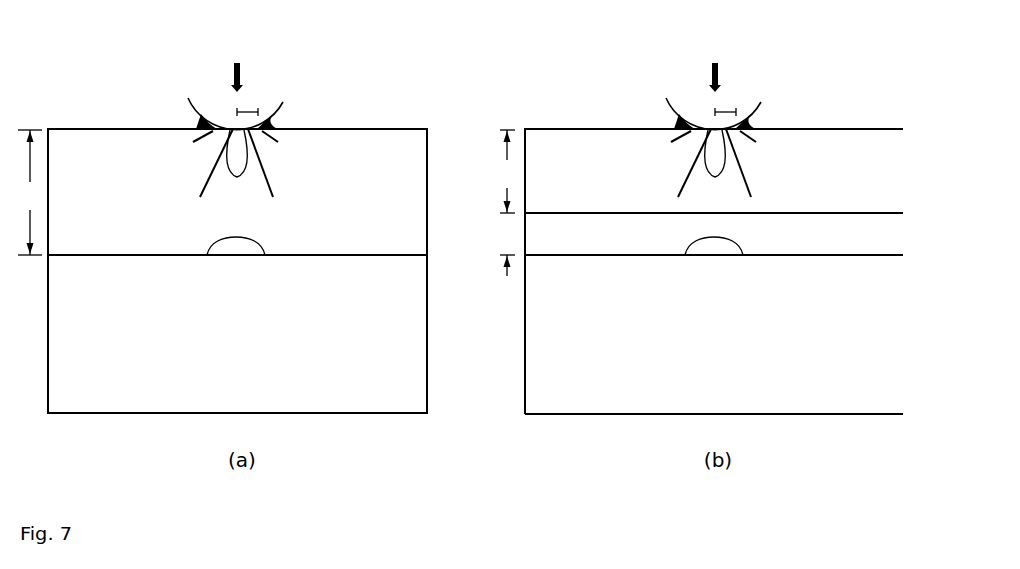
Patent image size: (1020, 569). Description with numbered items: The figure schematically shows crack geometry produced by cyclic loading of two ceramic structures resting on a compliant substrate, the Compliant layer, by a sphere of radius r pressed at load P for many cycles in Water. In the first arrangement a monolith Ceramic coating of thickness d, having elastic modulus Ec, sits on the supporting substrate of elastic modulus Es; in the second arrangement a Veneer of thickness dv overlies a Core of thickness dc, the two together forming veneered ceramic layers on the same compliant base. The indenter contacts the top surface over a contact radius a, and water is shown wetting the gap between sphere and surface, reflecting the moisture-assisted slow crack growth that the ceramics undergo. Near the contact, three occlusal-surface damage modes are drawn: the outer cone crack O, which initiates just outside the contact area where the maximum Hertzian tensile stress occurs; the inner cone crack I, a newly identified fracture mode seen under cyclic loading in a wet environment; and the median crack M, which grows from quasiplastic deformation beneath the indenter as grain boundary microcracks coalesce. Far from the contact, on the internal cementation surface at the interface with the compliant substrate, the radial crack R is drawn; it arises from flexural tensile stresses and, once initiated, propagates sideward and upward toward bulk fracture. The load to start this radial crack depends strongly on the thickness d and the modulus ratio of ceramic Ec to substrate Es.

The load P is at (493, 76).
The sphere radius r is at (470, 105).
The contact radius a is at (492, 111).
The water Water is at (286, 120).
The outer cone crack O is at (485, 142).
The median crack M is at (476, 167).
The inner cone crack I is at (483, 166).
The radial crack R is at (484, 242).
The ceramic layer thickness d is at (30, 192).
The elastic modulus of the ceramic Ec is at (237, 192).
The elastic modulus of the supporting substrate Es is at (237, 334).
The ceramic Ceramic is at (237, 168).
The compliant substrate Compliant is at (475, 367).
The veneer Veneer is at (714, 171).
The core Core is at (714, 234).
The veneer thickness dv is at (508, 171).
The core thickness dc is at (506, 250).